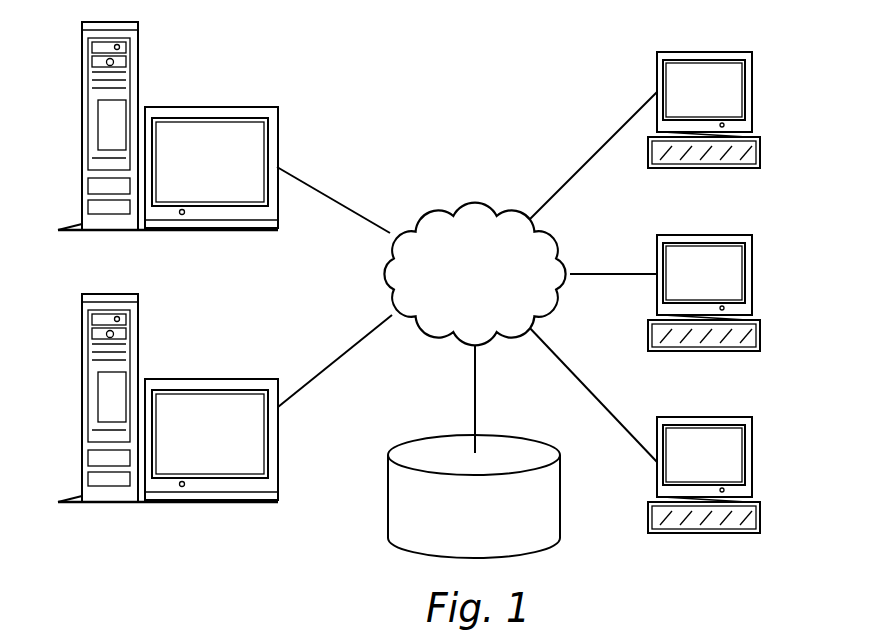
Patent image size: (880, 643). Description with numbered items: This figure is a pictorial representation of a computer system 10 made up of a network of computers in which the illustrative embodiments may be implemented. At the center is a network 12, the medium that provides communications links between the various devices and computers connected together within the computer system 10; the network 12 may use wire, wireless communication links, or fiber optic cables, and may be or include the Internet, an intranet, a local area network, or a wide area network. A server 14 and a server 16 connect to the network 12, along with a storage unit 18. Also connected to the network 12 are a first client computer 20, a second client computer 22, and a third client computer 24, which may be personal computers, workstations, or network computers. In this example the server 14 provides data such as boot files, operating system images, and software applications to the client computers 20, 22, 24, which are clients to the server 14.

The computer system 10 is at (541, 72).
The network 12 is at (435, 210).
The server 14 is at (82, 128).
The server 16 is at (82, 400).
The storage unit 18 is at (388, 498).
The first client computer 20 is at (752, 92).
The second client computer 22 is at (752, 275).
The third client computer 24 is at (752, 457).